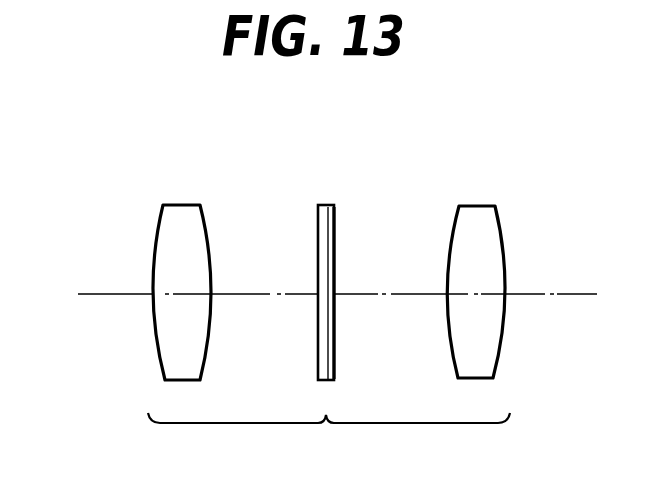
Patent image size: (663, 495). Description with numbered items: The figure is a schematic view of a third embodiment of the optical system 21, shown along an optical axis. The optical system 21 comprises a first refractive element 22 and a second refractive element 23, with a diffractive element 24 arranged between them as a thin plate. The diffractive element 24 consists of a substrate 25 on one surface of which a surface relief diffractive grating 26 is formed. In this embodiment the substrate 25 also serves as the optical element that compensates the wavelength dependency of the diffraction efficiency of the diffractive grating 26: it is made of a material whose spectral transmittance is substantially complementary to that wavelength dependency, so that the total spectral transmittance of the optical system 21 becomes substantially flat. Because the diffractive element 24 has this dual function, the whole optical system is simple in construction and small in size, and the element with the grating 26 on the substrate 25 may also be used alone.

The optical system 21 is at (329, 440).
The first refractive element 22 is at (183, 204).
The second refractive element 23 is at (478, 205).
The diffractive element 24 is at (327, 196).
The substrate 25 is at (335, 228).
The surface relief diffractive grating 26 is at (318, 249).